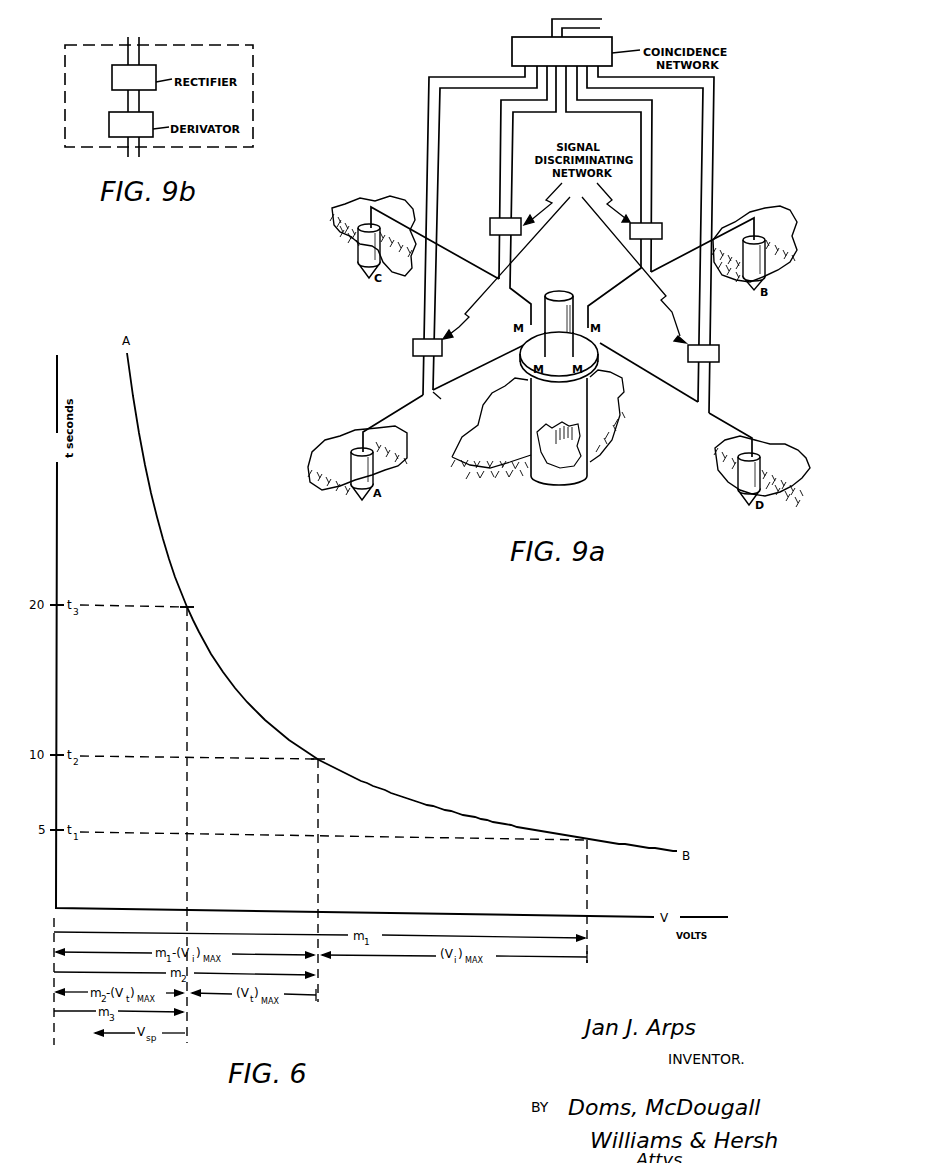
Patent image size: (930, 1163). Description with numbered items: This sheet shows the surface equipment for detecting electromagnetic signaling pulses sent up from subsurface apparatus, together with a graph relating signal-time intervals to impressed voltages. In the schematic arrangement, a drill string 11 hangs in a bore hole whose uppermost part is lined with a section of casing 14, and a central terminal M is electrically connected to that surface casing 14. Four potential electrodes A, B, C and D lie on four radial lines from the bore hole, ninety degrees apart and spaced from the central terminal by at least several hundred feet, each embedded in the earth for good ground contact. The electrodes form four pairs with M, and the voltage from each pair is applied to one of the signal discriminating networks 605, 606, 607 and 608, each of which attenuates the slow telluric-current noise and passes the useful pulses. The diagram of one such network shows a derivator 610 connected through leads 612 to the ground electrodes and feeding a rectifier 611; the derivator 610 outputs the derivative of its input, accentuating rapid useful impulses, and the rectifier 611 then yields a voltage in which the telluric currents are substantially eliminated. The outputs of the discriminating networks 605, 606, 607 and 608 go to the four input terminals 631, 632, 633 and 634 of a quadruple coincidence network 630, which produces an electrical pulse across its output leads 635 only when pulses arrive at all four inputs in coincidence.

In FIG. 9B, the signal discriminating network 605 is at (141, 48).
In FIG. 9A, the signal discriminating network 605 is at (427, 347).
In FIG. 9A, the signal discriminating network 606 is at (646, 231).
In FIG. 9A, the signal discriminating network 607 is at (505, 226).
In FIG. 9A, the signal discriminating network 608 is at (703, 353).
In FIG. 9B, the derivator 610 is at (131, 124).
In FIG. 9B, the rectifier 611 is at (134, 77).
In FIG. 9B, the leads 612 is at (130, 152).
In FIG. 9A, the leads 612 is at (446, 402).
In FIG. 9A, the quadruple coincidence network 630 is at (562, 51).
In FIG. 9A, the input terminal 631 is at (468, 88).
In FIG. 9A, the input terminal 632 is at (643, 153).
In FIG. 9A, the input terminal 633 is at (513, 123).
In FIG. 9A, the input terminal 634 is at (703, 105).
In FIG. 9A, the output leads 635 is at (602, 20).
In FIG. 9A, the casing 14 is at (578, 413).
In FIG. 9A, the drill string 11 is at (560, 435).